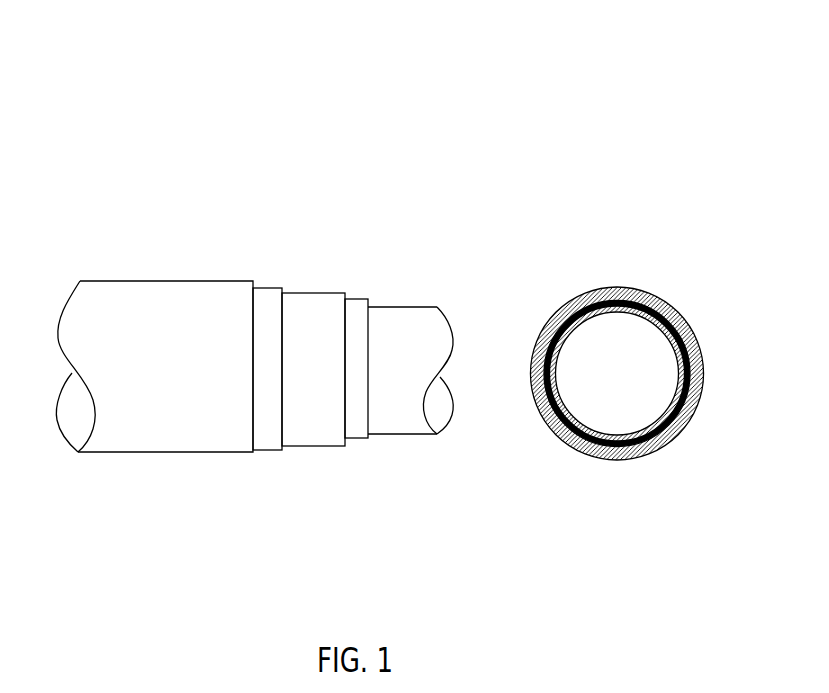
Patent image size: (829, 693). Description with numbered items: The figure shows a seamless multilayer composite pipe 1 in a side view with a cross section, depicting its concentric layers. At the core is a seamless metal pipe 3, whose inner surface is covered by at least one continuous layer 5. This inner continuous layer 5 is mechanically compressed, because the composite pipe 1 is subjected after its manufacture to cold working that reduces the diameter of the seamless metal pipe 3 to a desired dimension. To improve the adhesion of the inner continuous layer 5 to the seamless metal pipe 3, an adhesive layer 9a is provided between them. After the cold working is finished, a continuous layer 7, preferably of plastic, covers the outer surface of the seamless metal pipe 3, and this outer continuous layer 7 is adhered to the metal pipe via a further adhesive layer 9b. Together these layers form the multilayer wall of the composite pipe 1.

The seamless multilayer composite pipe 1 is at (270, 147).
The seamless metal pipe 3 is at (295, 300).
The continuous layer 5 is at (393, 315).
The continuous layer 7 is at (127, 297).
The adhesive layer 9a is at (358, 433).
The adhesive layer 9b is at (257, 433).